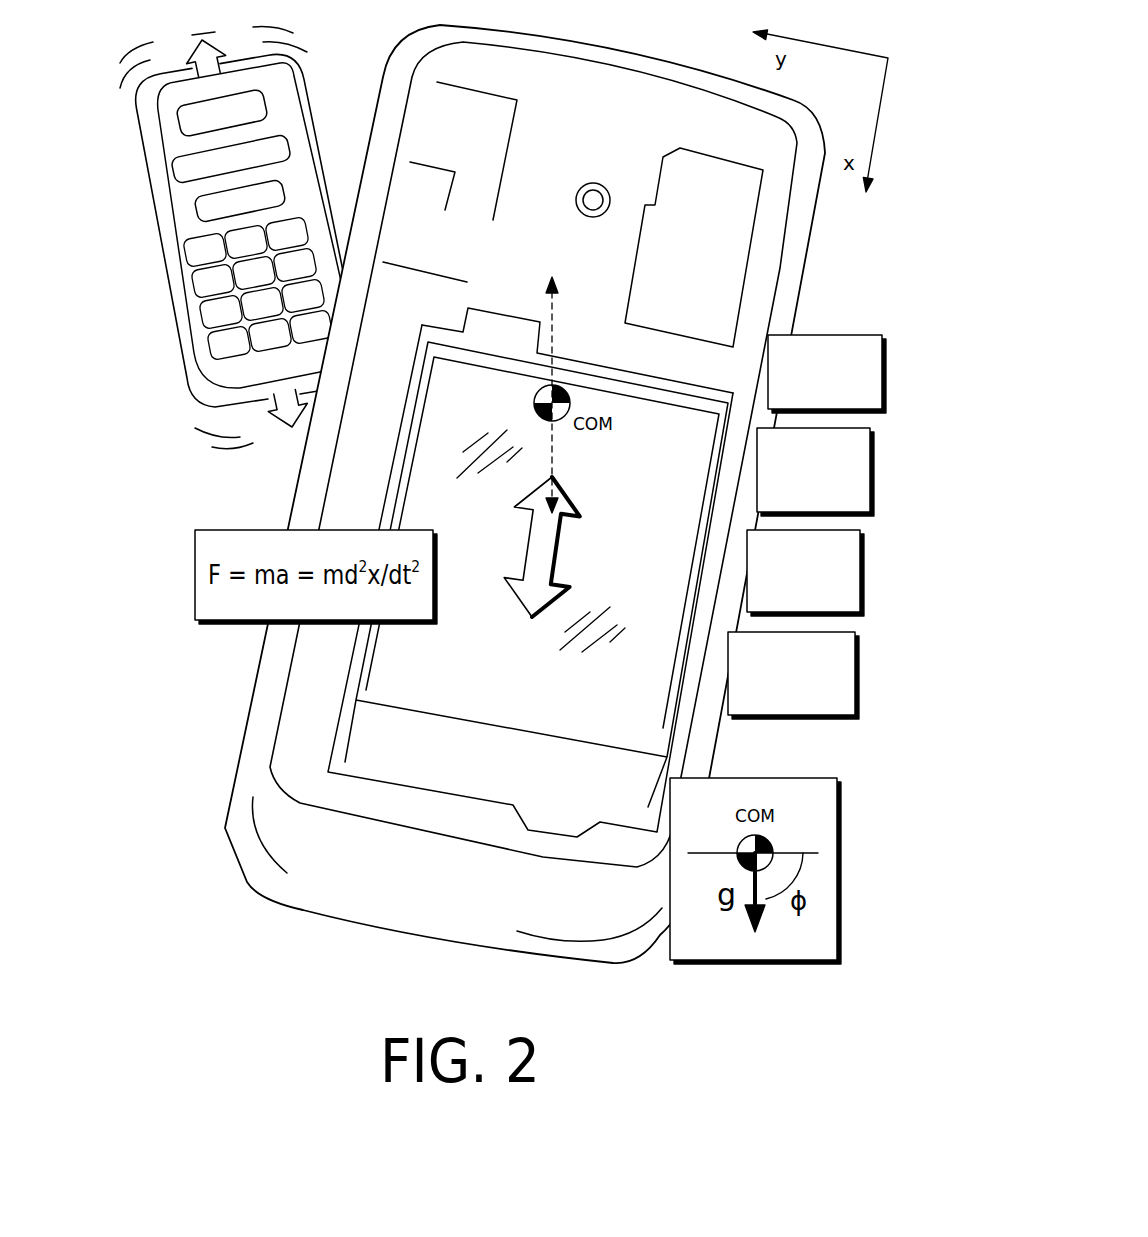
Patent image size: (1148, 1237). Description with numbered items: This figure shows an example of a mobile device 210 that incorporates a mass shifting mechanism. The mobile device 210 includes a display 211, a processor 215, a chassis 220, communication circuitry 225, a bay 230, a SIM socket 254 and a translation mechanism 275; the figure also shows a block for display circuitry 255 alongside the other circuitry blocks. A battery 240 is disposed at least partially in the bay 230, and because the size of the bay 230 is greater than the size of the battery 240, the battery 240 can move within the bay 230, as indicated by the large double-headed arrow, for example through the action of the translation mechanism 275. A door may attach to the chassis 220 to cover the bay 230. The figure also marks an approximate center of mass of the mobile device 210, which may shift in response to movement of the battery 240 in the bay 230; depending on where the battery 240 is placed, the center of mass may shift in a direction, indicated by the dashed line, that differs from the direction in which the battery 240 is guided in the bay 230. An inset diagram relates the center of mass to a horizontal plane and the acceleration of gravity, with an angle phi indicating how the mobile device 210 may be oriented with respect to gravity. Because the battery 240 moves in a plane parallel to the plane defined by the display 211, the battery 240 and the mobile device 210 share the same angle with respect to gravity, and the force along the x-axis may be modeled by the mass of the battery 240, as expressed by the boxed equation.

The mobile device 210 is at (165, 272).
The display 211 is at (287, 117).
The processor 215 is at (827, 374).
The chassis 220 is at (530, 566).
The communication circuitry 225 is at (815, 472).
The bay 230 is at (622, 378).
The battery 240 is at (536, 574).
The SIM socket 254 is at (694, 247).
The display circuitry 255 is at (805, 573).
The translation mechanism 275 is at (793, 675).